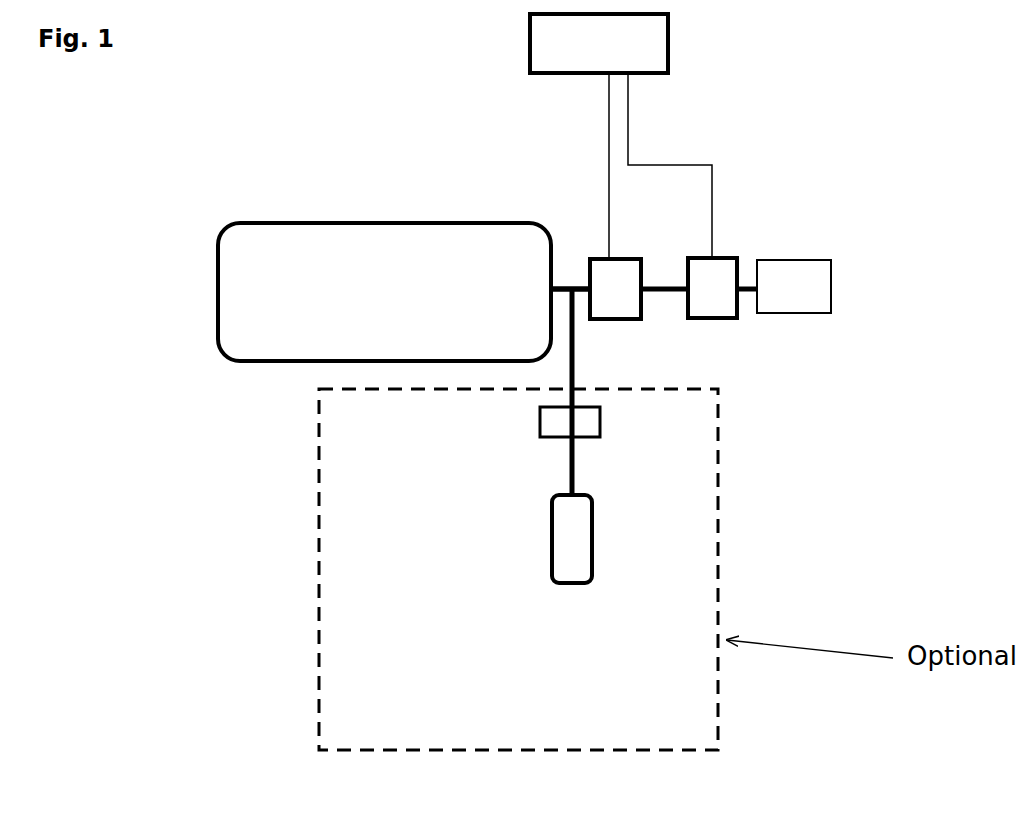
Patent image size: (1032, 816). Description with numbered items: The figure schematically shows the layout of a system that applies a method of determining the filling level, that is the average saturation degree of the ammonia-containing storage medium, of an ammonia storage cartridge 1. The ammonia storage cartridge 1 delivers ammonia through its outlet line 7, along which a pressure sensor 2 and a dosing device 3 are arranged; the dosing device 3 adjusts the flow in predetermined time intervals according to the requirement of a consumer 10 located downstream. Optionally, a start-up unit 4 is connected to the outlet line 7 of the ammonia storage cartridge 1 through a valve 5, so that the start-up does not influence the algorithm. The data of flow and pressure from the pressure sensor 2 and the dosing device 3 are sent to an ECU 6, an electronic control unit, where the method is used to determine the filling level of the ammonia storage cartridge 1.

The ammonia storage cartridge 1 is at (358, 205).
The pressure sensor 2 is at (643, 308).
The dosing device 3 is at (727, 262).
The start-up unit 4 is at (575, 545).
The valve 5 is at (563, 428).
The ECU (Electronic Control Unit) 6 is at (676, 41).
The outlet line 7 is at (582, 283).
The consumer 10 is at (812, 256).